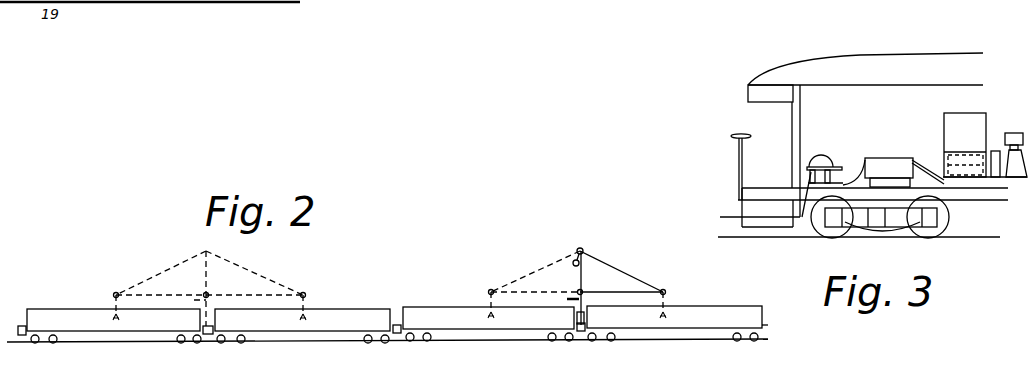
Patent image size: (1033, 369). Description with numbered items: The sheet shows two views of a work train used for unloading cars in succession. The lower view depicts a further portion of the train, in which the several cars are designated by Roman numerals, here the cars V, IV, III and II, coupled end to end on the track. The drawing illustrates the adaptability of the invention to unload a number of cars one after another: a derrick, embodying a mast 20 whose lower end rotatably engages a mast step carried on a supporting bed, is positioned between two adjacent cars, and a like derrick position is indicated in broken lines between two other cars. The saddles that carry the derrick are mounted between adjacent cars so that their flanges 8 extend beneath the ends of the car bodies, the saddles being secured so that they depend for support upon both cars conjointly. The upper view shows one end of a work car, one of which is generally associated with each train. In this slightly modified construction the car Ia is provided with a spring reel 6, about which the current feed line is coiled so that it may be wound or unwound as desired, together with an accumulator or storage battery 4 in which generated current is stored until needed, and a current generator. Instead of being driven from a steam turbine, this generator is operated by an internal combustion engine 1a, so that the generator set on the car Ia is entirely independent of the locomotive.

In FIG. 2, the car V is at (114, 326).
In FIG. 2, the car IV is at (302, 326).
In FIG. 2, the car III is at (488, 324).
In FIG. 2, the car II is at (674, 323).
In FIG. 2, the flanges 8 is at (210, 288).
In FIG. 3, the flanges 8 is at (945, 165).
In FIG. 2, the mast 20 is at (580, 273).
In FIG. 3, the car Ia is at (872, 136).
In FIG. 3, the internal combustion engine 1a is at (1008, 133).
In FIG. 3, the spring reel 6 is at (834, 152).
In FIG. 3, the accumulators or storage batteries 4 is at (897, 158).